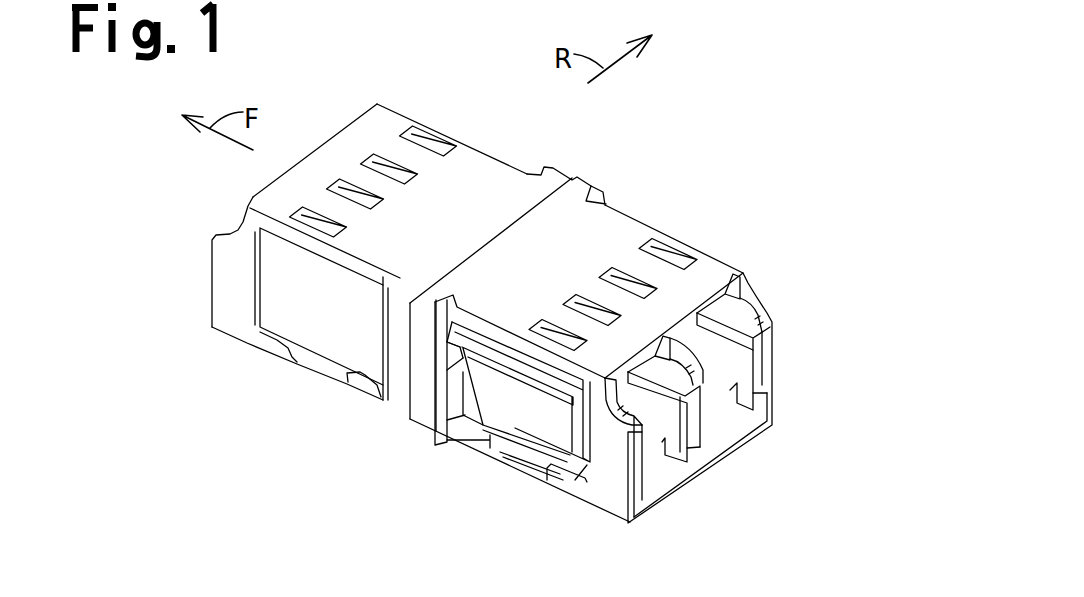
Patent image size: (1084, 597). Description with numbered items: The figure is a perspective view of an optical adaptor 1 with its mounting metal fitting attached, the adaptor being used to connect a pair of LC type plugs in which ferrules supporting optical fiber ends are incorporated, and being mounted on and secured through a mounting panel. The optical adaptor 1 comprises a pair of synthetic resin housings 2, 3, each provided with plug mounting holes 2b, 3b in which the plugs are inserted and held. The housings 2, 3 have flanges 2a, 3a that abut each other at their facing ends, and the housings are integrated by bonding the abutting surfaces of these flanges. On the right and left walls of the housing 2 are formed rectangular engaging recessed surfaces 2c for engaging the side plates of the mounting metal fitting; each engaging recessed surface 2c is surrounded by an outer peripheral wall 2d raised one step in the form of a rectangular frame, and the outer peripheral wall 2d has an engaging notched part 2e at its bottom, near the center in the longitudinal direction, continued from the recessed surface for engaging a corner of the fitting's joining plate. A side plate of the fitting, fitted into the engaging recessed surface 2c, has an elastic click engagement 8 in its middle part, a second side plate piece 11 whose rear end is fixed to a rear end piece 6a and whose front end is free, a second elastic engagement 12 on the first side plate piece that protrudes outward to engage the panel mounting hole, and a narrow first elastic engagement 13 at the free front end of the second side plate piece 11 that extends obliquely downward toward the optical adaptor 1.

The optical adaptor 1 is at (723, 116).
The housing 2 is at (640, 222).
The flange 2a is at (589, 180).
The plug mounting hole 2b is at (657, 483).
The engaging recessed surface 2c is at (573, 487).
The outer peripheral wall 2d is at (560, 485).
The engaging notched part 2e is at (525, 460).
The housing 3 is at (493, 158).
The flange 3a is at (555, 170).
The plug mounting hole 3b is at (233, 232).
The rear end piece 6a is at (595, 435).
The elastic click engagement 8 is at (517, 423).
The second side plate piece 11 is at (447, 375).
The second elastic engagement 12 is at (475, 428).
The first elastic engagement 13 is at (447, 370).